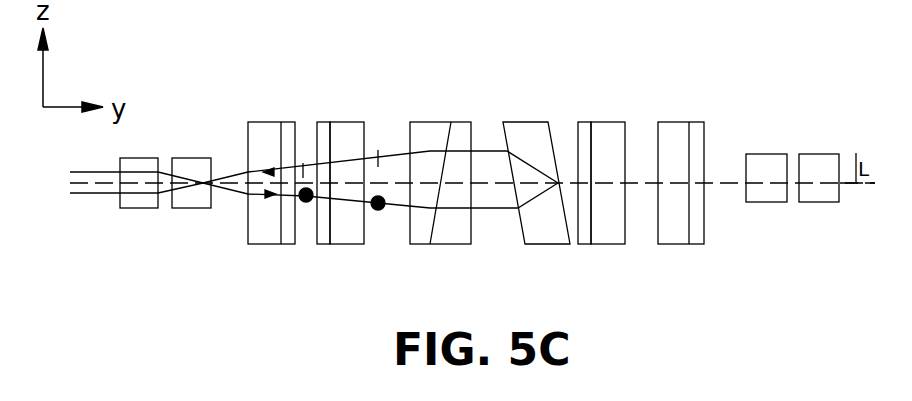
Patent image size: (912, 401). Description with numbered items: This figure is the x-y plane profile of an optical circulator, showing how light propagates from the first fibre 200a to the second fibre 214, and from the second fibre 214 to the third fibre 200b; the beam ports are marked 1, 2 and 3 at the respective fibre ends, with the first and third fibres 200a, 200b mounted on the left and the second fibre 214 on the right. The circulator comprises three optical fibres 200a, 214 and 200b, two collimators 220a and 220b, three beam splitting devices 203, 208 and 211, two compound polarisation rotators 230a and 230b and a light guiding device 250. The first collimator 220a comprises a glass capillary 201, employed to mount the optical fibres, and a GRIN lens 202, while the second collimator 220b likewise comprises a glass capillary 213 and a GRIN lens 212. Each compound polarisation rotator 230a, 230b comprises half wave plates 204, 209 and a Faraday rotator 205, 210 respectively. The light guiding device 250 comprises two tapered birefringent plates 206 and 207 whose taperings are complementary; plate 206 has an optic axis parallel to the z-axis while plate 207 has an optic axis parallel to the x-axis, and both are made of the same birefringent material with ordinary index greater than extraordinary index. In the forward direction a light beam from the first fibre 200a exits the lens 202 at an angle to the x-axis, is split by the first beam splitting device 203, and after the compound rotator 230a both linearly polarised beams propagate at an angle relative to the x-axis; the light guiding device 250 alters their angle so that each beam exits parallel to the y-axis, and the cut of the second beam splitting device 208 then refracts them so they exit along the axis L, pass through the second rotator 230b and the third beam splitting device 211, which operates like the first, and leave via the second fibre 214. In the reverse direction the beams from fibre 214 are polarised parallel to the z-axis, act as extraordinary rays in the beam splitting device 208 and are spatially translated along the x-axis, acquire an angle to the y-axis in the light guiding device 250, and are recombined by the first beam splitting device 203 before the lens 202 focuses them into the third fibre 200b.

The first light beam 1 is at (114, 157).
The output light beam 2 is at (857, 222).
The second light beam 3 is at (114, 214).
The first optical fibre 200a is at (125, 116).
The third optical fibre 200b is at (116, 251).
The glass capillary 201 is at (140, 158).
The GRIN lens 202 is at (193, 158).
The first beam splitting device 203 is at (283, 122).
The half wave plate 204 is at (323, 122).
The Faraday rotator 205 is at (348, 122).
The tapered birefringent plate 206 is at (440, 122).
The tapered birefringent plate 207 is at (468, 122).
The second beam splitting device 208 is at (528, 122).
The half wave plate 209 is at (585, 122).
The Faraday rotator 210 is at (618, 122).
The third beam splitting device 211 is at (679, 122).
The GRIN lens 212 is at (755, 154).
The glass capillary 213 is at (810, 154).
The second optical fibre 214 is at (857, 153).
The first collimator 220a is at (192, 164).
The second collimator 220b is at (770, 164).
The first compound polarisation rotator 230a is at (339, 164).
The second compound polarisation rotator 230b is at (621, 164).
The light guiding device 250 is at (467, 164).